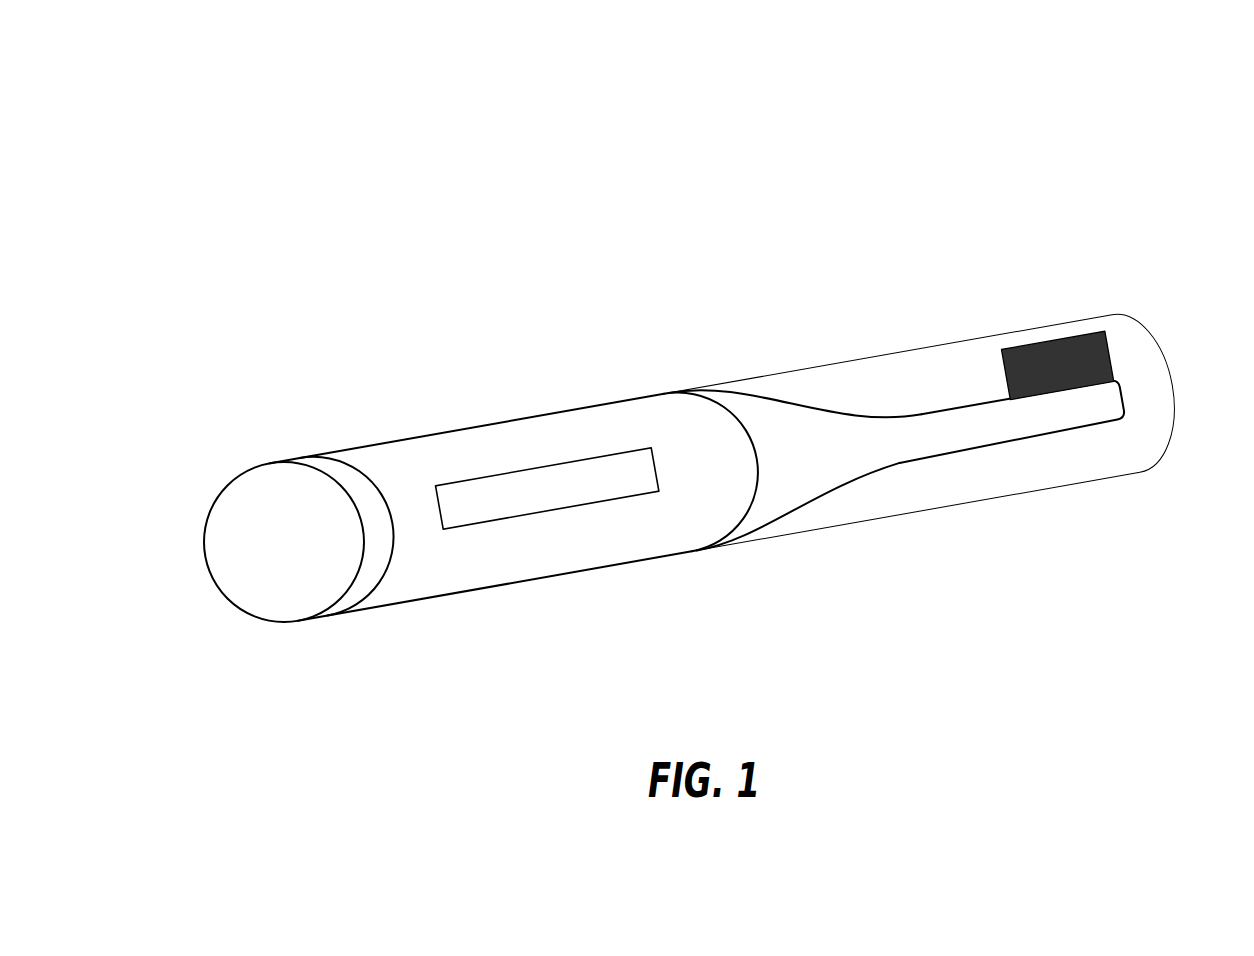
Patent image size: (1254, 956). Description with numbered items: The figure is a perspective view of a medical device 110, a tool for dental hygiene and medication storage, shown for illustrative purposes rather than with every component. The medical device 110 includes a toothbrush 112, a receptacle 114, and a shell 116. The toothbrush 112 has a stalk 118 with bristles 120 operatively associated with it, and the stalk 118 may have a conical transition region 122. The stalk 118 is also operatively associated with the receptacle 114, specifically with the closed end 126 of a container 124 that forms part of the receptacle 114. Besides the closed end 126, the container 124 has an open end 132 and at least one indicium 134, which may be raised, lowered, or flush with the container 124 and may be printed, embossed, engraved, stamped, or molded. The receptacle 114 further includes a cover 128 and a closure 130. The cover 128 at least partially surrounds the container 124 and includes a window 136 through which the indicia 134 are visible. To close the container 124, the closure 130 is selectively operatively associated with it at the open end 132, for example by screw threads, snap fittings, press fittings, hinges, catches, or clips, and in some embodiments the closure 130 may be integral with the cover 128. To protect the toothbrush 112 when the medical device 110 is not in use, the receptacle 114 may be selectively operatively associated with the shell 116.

The medical device 110 is at (305, 152).
The toothbrush 112 is at (920, 487).
The receptacle 114 is at (577, 350).
The shell 116 is at (1087, 480).
The stalk 118 is at (810, 500).
The bristles 120 is at (1005, 377).
The conical transition region 122 is at (818, 403).
The container 124 is at (638, 465).
The closed end 126 is at (753, 492).
The cover 128 is at (395, 442).
The closure 130 is at (237, 477).
The open end 132 is at (375, 583).
The indicium 134 is at (543, 475).
The window 136 is at (602, 503).